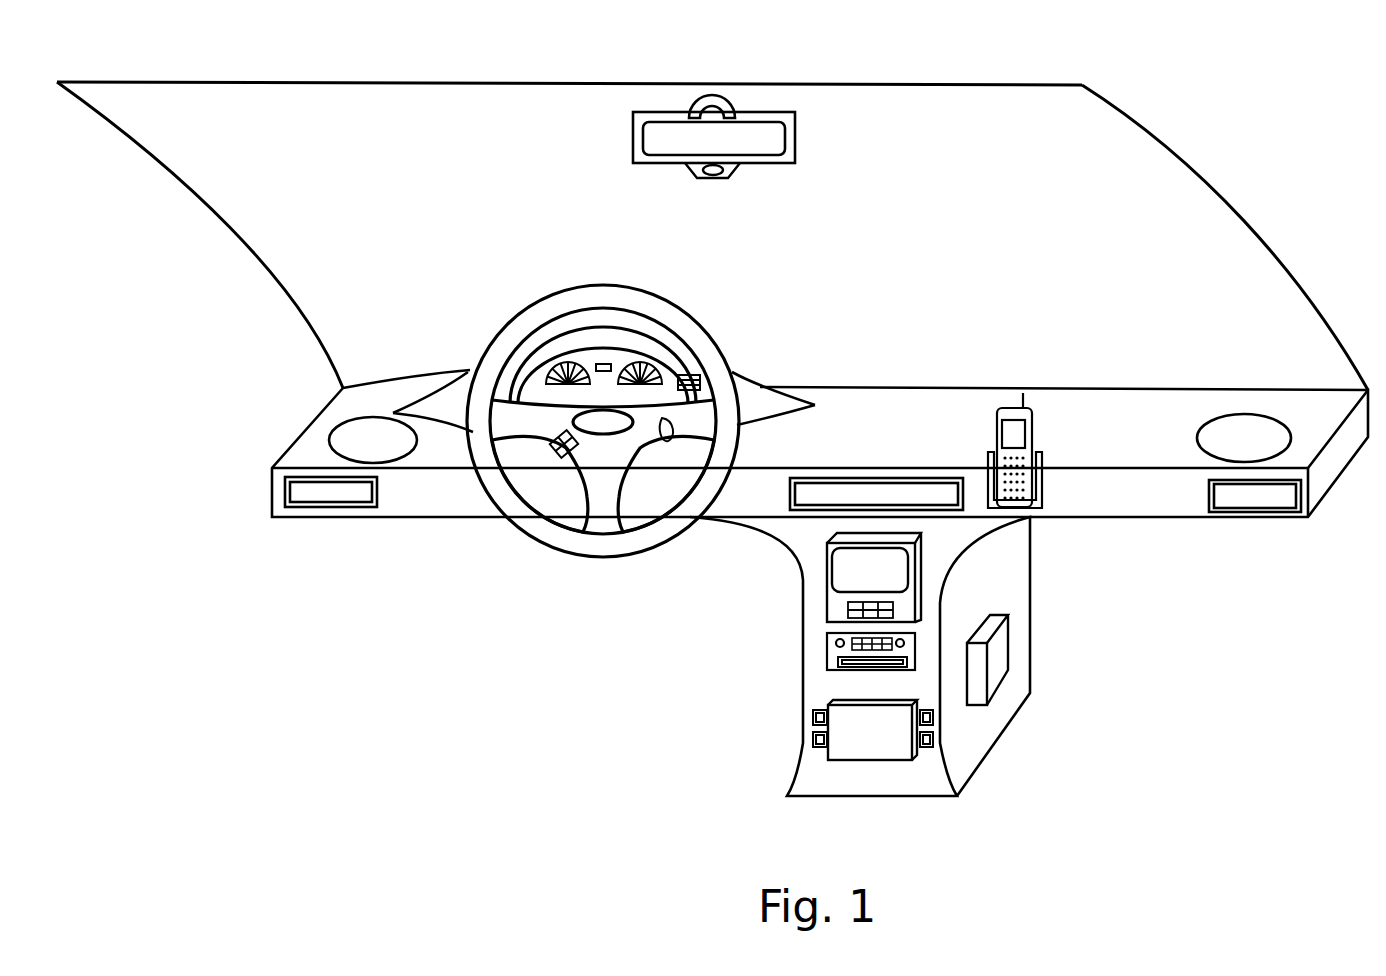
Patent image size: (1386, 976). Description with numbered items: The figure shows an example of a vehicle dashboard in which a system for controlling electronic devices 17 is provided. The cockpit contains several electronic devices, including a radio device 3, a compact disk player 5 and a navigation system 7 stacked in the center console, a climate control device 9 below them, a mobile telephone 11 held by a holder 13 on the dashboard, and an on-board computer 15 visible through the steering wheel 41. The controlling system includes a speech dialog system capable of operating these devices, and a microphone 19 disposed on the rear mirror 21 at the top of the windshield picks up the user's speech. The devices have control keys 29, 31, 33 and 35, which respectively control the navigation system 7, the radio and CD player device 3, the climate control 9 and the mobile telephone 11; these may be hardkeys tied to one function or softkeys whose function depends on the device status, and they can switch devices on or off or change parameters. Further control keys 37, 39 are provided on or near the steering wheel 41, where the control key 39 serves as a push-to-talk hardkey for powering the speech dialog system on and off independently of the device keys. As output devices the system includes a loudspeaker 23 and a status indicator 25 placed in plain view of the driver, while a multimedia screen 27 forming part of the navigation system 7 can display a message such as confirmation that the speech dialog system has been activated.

The radio device 3 is at (917, 657).
The compact disk (CD) player 5 is at (900, 670).
The navigation system 7 is at (825, 596).
The climate control device 9 is at (888, 760).
The mobile telephone 11 is at (1035, 437).
The holder 13 is at (1045, 495).
The on-board computer 15 is at (603, 364).
The system for controlling electronic devices 17 is at (1000, 655).
The microphone 19 is at (695, 170).
The rear mirror 21 is at (785, 115).
The loudspeaker 23 is at (330, 438).
The status indicator 25 is at (690, 375).
The multimedia screen 27 is at (843, 568).
The control key 29 is at (847, 613).
The control key 31 is at (833, 647).
The control key 33 is at (810, 750).
The control key 35 is at (993, 468).
The control key 37 is at (565, 455).
The push-to-talk (PTT) control key 39 is at (660, 440).
The steering wheel 41 is at (512, 523).